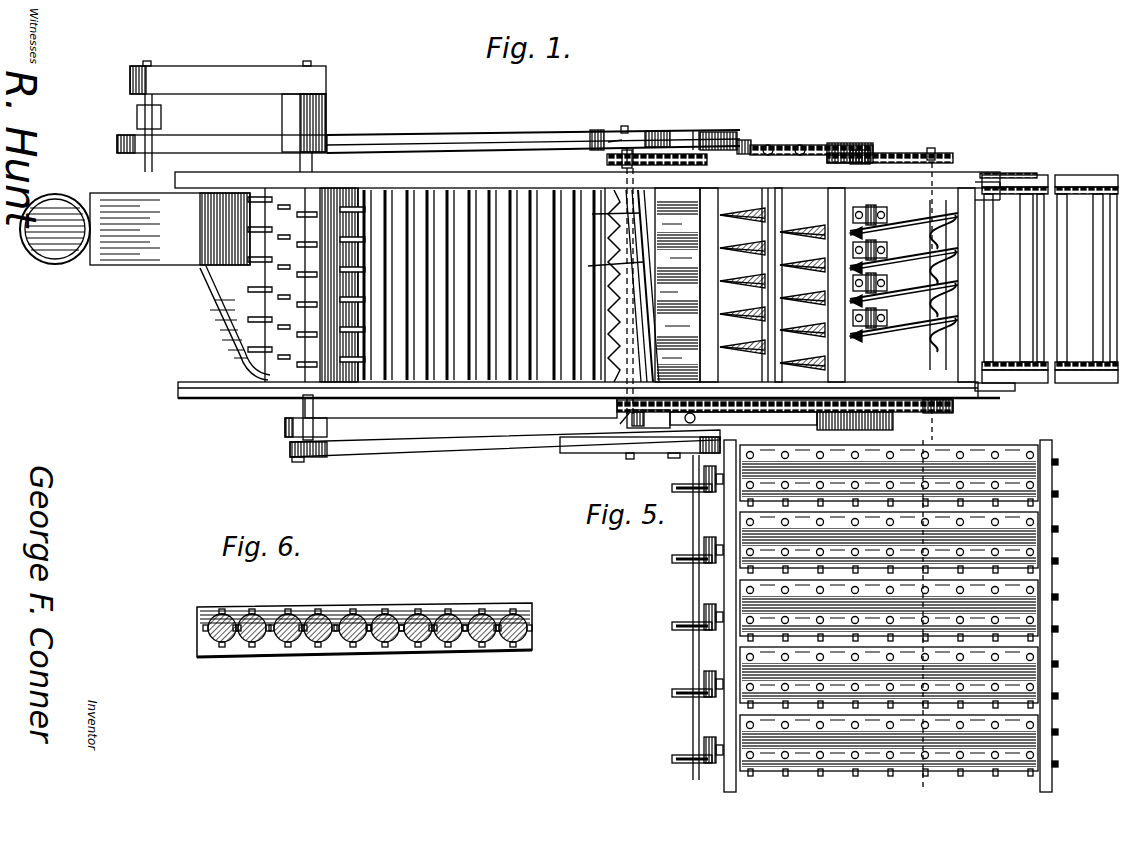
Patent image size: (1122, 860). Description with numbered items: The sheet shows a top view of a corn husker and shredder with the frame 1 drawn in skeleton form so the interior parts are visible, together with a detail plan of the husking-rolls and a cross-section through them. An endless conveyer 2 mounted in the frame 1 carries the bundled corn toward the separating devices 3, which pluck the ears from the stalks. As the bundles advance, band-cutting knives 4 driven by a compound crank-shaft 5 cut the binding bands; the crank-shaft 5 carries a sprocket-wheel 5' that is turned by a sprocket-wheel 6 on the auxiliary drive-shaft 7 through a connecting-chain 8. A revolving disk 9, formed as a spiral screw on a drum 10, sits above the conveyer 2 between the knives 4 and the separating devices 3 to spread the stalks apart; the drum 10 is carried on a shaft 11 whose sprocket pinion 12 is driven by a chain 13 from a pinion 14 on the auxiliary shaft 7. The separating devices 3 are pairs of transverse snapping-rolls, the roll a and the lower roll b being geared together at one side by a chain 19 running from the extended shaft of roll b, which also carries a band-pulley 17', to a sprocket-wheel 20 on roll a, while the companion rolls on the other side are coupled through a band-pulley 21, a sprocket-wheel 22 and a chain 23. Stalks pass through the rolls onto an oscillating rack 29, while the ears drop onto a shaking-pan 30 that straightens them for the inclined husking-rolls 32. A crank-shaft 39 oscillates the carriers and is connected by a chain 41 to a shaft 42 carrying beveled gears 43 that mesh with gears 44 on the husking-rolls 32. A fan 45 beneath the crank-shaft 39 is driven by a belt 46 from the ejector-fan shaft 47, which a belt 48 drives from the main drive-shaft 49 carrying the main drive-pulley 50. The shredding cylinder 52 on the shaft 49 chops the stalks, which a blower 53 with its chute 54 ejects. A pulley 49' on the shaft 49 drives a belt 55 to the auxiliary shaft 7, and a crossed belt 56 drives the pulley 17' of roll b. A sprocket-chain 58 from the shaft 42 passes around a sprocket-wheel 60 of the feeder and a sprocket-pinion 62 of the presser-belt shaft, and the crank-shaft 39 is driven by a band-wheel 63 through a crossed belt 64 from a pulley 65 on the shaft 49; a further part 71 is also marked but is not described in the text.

In FIG. 1, the frame 1 is at (278, 391).
In FIG. 1, the feeder or endless conveyer 2 is at (1030, 280).
In FIG. 1, the separating devices 3 is at (640, 340).
In FIG. 1, the band-cutting knives 4 is at (925, 290).
In FIG. 1, the compound crank-shaft 5 is at (904, 272).
In FIG. 1, the sprocket-wheel 5' is at (948, 148).
In FIG. 1, the sprocket-wheel 6 is at (868, 151).
In FIG. 5, the sprocket-wheel 6 is at (911, 615).
In FIG. 1, the auxiliary drive-shaft 7 is at (850, 143).
In FIG. 1, the connecting-chain 8 is at (900, 155).
In FIG. 1, the revolving disk 9 is at (758, 220).
In FIG. 1, the drum 10 is at (768, 266).
In FIG. 1, the shaft 11 is at (770, 145).
In FIG. 1, the sprocket wheel or pinion 12 is at (796, 145).
In FIG. 1, the chain 13 is at (812, 147).
In FIG. 1, the sprocket wheel or pinion 14 is at (868, 141).
In FIG. 1, the band-pulley 17' is at (588, 128).
In FIG. 1, the chain 19 is at (655, 131).
In FIG. 1, the sprocket-wheel 20 is at (607, 160).
In FIG. 1, the band-pulley 21 is at (575, 464).
In FIG. 1, the sprocket-wheel 22 is at (617, 406).
In FIG. 1, the chain 23 is at (648, 425).
In FIG. 1, the oscillating carrier or rack 29 is at (482, 285).
In FIG. 1, the shaking-pan 30 is at (686, 285).
In FIG. 5, the husking-rolls 32 is at (899, 610).
In FIG. 6, the husking-rolls 32 is at (418, 612).
In FIG. 1, the crank-shaft 39 is at (672, 456).
In FIG. 1, the chain 41 is at (700, 132).
In FIG. 1, the shaft 42 is at (718, 134).
In FIG. 5, the shaft 42 is at (695, 598).
In FIG. 5, the beveled gears 43 is at (690, 565).
In FIG. 5, the gears 44 is at (690, 630).
In FIG. 1, the fan 45 is at (744, 141).
In FIG. 1, the belt 46 is at (245, 146).
In FIG. 1, the ejector-fan shaft 47 is at (145, 172).
In FIG. 1, the belt 48 is at (220, 72).
In FIG. 1, the main drive-shaft 49 is at (284, 239).
In FIG. 1, the pulley 49' is at (279, 455).
In FIG. 1, the main drive-pulley 50 is at (304, 106).
In FIG. 1, the cutting, beating, or shredding cylinder 52 is at (282, 285).
In FIG. 1, the blower or pneumatic ejecting device 53 is at (170, 229).
In FIG. 1, the chute 54 is at (52, 238).
In FIG. 1, the belt 55 is at (515, 414).
In FIG. 1, the crossed belt 56 is at (496, 142).
In FIG. 1, the sprocket-chain 58 is at (784, 410).
In FIG. 1, the sprocket-wheel 60 is at (701, 420).
In FIG. 1, the sprocket-pinion 62 is at (953, 406).
In FIG. 1, the band-wheel 63 is at (630, 456).
In FIG. 1, the crossed belt 64 is at (520, 449).
In FIG. 1, the pulley 65 is at (288, 460).
In FIG. 1, the clutch 71 is at (880, 426).
In FIG. 1, the snapping-roll a is at (609, 178).
In FIG. 1, the snapping-roll b is at (608, 272).